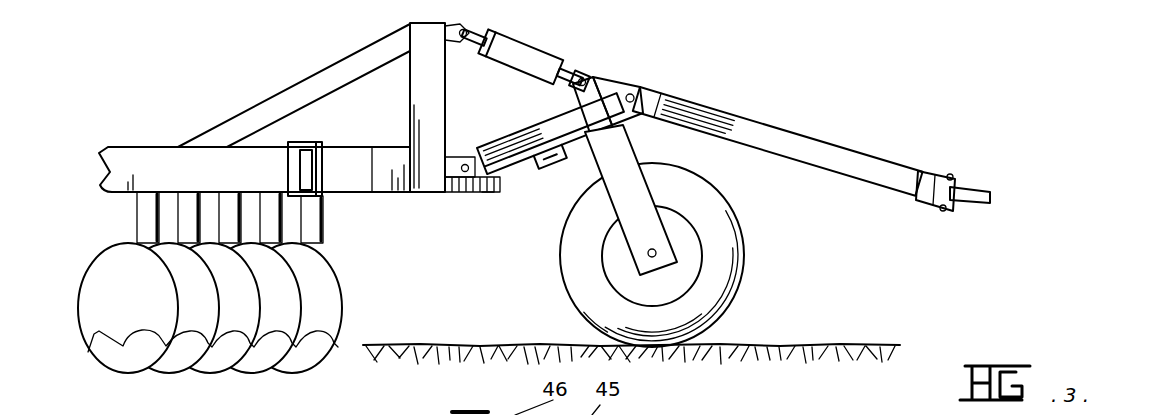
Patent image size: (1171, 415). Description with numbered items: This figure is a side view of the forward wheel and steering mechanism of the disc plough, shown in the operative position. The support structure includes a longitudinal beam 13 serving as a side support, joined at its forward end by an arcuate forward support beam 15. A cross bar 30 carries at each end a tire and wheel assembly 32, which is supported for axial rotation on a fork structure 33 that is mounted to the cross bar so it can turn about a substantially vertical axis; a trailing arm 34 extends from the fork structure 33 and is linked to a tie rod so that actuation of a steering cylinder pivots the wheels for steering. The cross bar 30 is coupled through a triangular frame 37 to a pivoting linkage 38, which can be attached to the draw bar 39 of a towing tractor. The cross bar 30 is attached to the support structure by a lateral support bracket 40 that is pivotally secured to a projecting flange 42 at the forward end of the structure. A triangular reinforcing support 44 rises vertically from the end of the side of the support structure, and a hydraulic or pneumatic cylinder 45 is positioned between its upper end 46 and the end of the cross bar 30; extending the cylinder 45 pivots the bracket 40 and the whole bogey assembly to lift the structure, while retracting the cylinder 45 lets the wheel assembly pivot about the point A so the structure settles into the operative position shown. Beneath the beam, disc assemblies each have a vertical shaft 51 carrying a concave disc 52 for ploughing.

The longitudinal beam 13 is at (170, 168).
The arcuate forward support beam 15 is at (391, 170).
The cross bar 30 is at (598, 122).
The tire and wheel assembly 32 is at (737, 285).
The fork structure 33 is at (624, 166).
The trailing arm 34 is at (560, 176).
The triangular frame 37 is at (803, 152).
The pivoting linkage 38 is at (634, 92).
The draw bar 39 is at (970, 190).
The lateral support bracket 40 is at (540, 133).
The projecting flange 42 is at (445, 196).
The triangular reinforcing support 44 is at (318, 88).
The hydraulic or pneumatic cylinder 45 is at (543, 66).
The upper end of the support 46 is at (455, 44).
The vertical shaft 51 is at (142, 213).
The concave disc 52 is at (188, 295).
The pivot point A is at (488, 193).